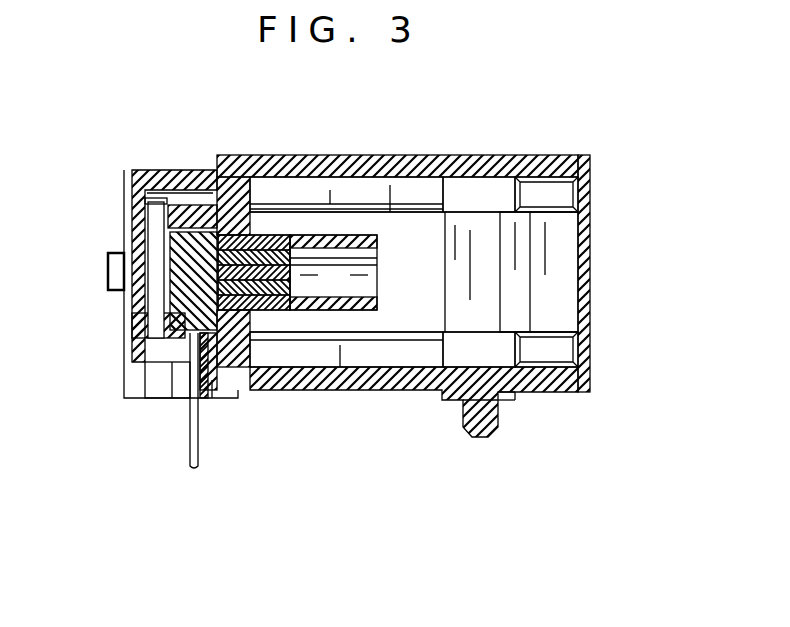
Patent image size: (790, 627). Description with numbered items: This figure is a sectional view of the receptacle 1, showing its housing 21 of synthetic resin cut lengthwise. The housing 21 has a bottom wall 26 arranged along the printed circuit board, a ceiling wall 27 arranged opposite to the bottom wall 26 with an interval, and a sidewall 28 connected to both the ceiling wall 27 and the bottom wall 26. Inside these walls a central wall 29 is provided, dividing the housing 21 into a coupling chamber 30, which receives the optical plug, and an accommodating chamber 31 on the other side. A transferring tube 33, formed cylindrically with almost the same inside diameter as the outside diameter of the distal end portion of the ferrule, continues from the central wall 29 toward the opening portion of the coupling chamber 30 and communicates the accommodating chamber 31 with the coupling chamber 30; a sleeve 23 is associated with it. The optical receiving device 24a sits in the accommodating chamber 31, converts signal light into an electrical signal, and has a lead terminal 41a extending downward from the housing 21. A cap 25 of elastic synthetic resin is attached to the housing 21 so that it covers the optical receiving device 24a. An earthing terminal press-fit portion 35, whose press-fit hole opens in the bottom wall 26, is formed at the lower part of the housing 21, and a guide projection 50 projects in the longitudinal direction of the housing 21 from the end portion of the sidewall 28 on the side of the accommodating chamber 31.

The receptacle 1 is at (616, 145).
The housing 21 is at (525, 156).
The sleeve 23 is at (273, 234).
The optical receiving device 24a is at (133, 305).
The cap 25 is at (131, 225).
The bottom wall 26 is at (372, 385).
The ceiling wall 27 is at (388, 186).
The sidewall 28 is at (567, 243).
The central wall 29 is at (232, 224).
The coupling chamber 30 is at (565, 304).
The accommodating chamber 31 is at (178, 194).
The transferring tube 33 is at (357, 228).
The earthing terminal press-fit portion 35 is at (213, 402).
The lead terminal 41a is at (188, 422).
The guide projection 50 is at (108, 272).